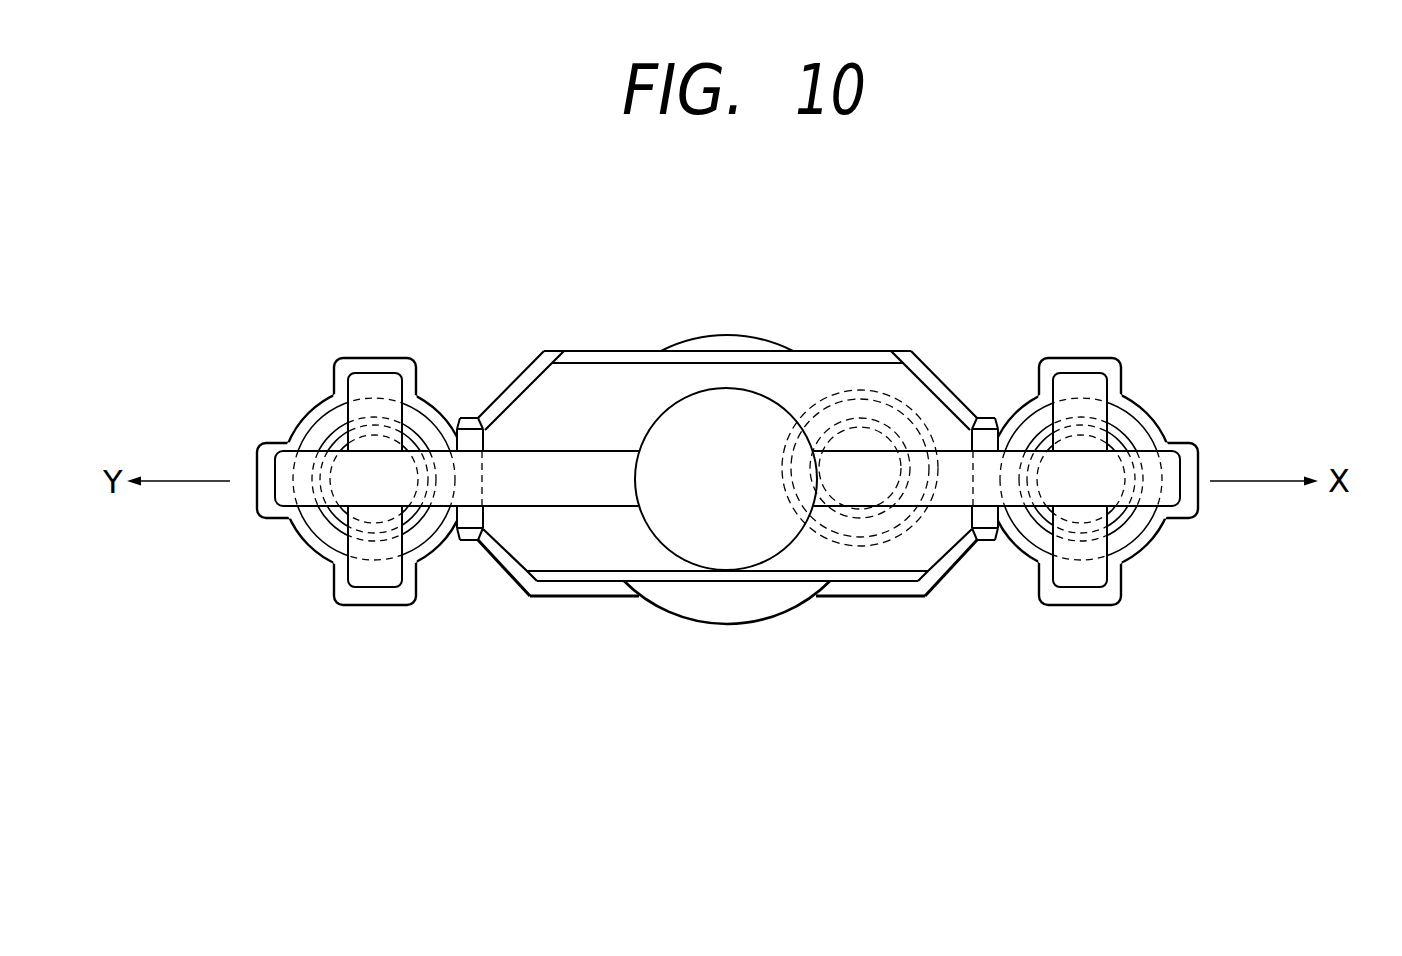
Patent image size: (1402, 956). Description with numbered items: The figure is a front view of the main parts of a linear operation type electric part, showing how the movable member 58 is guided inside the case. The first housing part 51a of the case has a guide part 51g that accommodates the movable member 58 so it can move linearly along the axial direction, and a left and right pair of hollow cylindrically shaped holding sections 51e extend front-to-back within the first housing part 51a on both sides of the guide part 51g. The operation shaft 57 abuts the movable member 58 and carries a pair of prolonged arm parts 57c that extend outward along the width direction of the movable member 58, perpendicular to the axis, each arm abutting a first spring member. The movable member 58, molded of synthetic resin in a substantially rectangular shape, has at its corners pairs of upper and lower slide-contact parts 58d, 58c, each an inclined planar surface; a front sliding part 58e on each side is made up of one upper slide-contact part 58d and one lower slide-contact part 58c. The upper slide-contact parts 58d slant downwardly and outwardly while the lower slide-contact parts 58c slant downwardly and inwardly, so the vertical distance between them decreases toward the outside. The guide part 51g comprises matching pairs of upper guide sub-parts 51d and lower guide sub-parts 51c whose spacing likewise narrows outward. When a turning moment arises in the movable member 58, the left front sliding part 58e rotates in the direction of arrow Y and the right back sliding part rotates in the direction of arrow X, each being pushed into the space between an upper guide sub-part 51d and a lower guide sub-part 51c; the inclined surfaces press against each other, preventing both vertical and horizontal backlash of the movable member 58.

The first housing part 51a is at (818, 348).
The lower guide sub-part 51c is at (507, 558).
The upper guide sub-part 51d is at (545, 382).
The holding section 51e is at (312, 408).
The guide part 51g is at (497, 391).
The operation shaft 57 is at (730, 513).
The prolonged arm part 57c is at (298, 482).
The movable member 58 is at (601, 540).
The lower slide-contact part 58c is at (510, 558).
The upper slide-contact part 58d is at (575, 379).
The front sliding part 58e is at (567, 433).